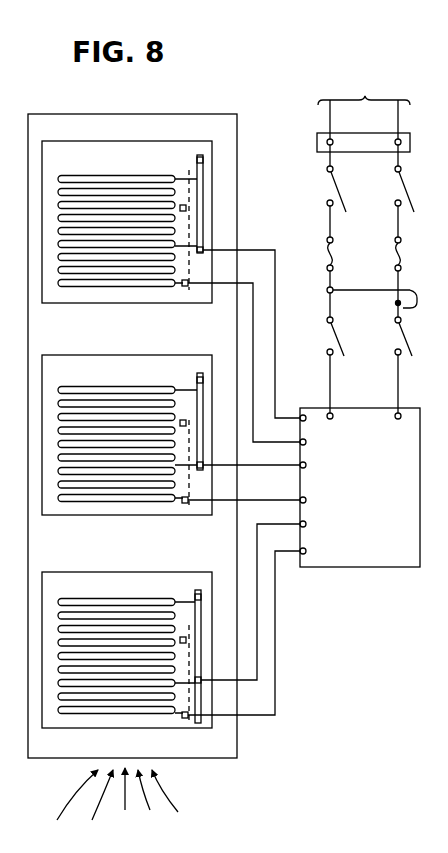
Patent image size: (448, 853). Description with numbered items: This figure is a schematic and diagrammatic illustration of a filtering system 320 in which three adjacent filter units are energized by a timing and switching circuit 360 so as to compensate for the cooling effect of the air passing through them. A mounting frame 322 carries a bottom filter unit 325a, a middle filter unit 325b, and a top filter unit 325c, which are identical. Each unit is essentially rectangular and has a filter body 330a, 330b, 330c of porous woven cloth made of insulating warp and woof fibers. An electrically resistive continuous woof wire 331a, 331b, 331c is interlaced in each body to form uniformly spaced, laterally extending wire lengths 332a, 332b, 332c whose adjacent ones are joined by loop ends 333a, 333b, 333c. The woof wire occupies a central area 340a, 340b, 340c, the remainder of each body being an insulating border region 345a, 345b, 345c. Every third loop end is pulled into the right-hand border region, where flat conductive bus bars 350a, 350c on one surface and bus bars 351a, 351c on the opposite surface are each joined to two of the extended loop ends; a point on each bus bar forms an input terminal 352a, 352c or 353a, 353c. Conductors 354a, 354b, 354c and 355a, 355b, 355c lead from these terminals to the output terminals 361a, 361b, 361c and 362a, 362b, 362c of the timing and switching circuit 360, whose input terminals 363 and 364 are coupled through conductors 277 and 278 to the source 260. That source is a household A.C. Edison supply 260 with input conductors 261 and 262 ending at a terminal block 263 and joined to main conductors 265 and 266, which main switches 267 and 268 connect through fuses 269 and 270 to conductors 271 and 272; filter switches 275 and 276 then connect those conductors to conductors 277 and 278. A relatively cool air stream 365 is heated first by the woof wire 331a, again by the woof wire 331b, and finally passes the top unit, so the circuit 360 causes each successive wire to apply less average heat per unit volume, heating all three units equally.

The filtering system 320 is at (232, 72).
The mounting frame 322 is at (135, 127).
The bottom filter unit 325a is at (110, 568).
The middle filter unit 325b is at (112, 351).
The top filter unit 325c is at (73, 138).
The filter body 330a is at (48, 556).
The filter body 330b is at (78, 355).
The filter body 330c is at (98, 141).
The woof wire 331a is at (105, 595).
The woof wire 331b is at (108, 383).
The woof wire 331c is at (150, 152).
The wire lengths 332a is at (92, 693).
The wire lengths 332b is at (105, 407).
The wire lengths 332c is at (85, 235).
The loop ends 333a is at (55, 640).
The loop ends 333b is at (183, 420).
The loop ends 333c is at (183, 205).
The central area 340a is at (152, 635).
The central area 340b is at (80, 427).
The central area 340c is at (160, 232).
The border region 345a is at (232, 752).
The border region 345b is at (53, 505).
The border region 345c is at (210, 190).
The bus bar 350a is at (197, 642).
The bus bar 350c is at (208, 160).
The bus bar 351a is at (190, 695).
The bus bar 351c is at (190, 195).
The input terminal 352a is at (203, 682).
The input terminal 352c is at (203, 250).
The input terminal 353a is at (187, 717).
The input terminal 353c is at (188, 282).
The conductor 354a is at (257, 650).
The conductor 354b is at (246, 500).
The conductor 354c is at (286, 342).
The conductor 355a is at (275, 677).
The conductor 355b is at (300, 465).
The conductor 355c is at (255, 303).
The timing and switching circuit 360 is at (415, 566).
The output terminal 361a is at (306, 527).
The output terminal 361b is at (300, 500).
The output terminal 361c is at (313, 400).
The output terminal 362a is at (306, 554).
The output terminal 362b is at (300, 467).
The output terminal 362c is at (300, 442).
The input terminal 363 is at (333, 414).
The input terminal 364 is at (401, 415).
The air stream 365 is at (105, 796).
The A.C. Edison supply 260 is at (433, 57).
The input conductor 261 is at (399, 118).
The input conductor 262 is at (331, 118).
The terminal block 263 is at (410, 143).
The main conductor 265 is at (402, 168).
The main conductor 266 is at (334, 168).
The main switch 267 is at (404, 196).
The main switch 268 is at (336, 196).
The fuse 269 is at (401, 246).
The fuse 270 is at (333, 246).
The conductor 271 is at (401, 283).
The conductor 272 is at (333, 283).
The filter switch 275 is at (401, 335).
The filter switch 276 is at (333, 335).
The conductor 277 is at (399, 388).
The conductor 278 is at (331, 388).